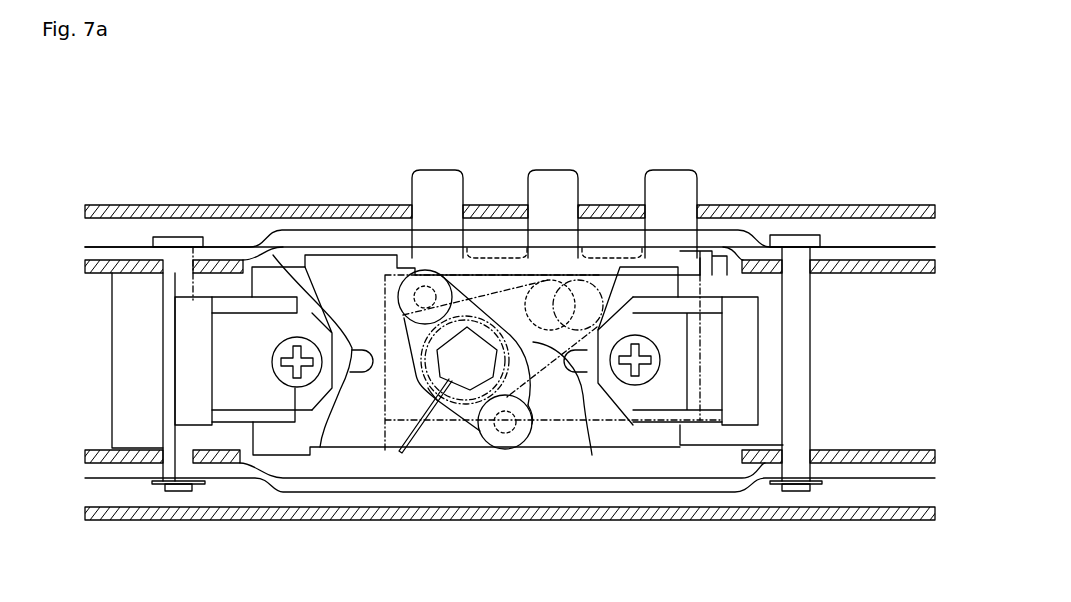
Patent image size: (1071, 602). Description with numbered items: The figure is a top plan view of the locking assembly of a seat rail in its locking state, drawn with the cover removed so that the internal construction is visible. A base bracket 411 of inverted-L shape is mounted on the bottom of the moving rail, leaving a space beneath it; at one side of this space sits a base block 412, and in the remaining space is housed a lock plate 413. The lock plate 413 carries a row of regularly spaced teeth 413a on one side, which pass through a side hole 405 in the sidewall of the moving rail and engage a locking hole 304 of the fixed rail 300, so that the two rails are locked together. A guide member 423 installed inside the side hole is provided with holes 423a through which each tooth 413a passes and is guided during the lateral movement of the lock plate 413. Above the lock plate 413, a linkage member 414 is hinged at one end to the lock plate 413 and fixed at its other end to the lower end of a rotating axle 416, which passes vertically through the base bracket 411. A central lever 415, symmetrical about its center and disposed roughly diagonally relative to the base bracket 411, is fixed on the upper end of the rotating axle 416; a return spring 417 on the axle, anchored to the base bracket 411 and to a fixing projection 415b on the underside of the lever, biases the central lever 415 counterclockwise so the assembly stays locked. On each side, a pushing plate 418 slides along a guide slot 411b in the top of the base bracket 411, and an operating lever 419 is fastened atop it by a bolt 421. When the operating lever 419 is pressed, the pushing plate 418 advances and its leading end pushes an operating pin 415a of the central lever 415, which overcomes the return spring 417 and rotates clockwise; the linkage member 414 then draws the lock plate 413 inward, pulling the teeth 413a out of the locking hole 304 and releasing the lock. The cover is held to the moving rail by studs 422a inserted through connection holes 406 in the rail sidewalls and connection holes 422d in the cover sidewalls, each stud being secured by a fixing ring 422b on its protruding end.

The fixed rail 300 is at (850, 212).
The locking hole 304 is at (696, 205).
The side hole 405 is at (406, 236).
The connection hole 406 is at (167, 250).
The base bracket 411 is at (128, 282).
The guide slot 411b is at (286, 262).
The base block 412 is at (332, 256).
The lock plate 413 is at (592, 270).
The teeth 413a is at (531, 165).
The linkage member 414 is at (592, 455).
The central lever 415 is at (457, 400).
The operating pin 415a is at (500, 437).
The fixing projection 415b is at (533, 405).
The rotating axle 416 is at (437, 402).
The return spring 417 is at (403, 433).
The pushing plate 418 is at (320, 447).
The operating lever 419 is at (203, 418).
The bolt 421 is at (331, 390).
The stud 422a is at (183, 238).
The fixing ring 422b is at (156, 489).
The connection hole 422d is at (165, 287).
The guide member 423 is at (722, 260).
The hole 423a is at (702, 246).